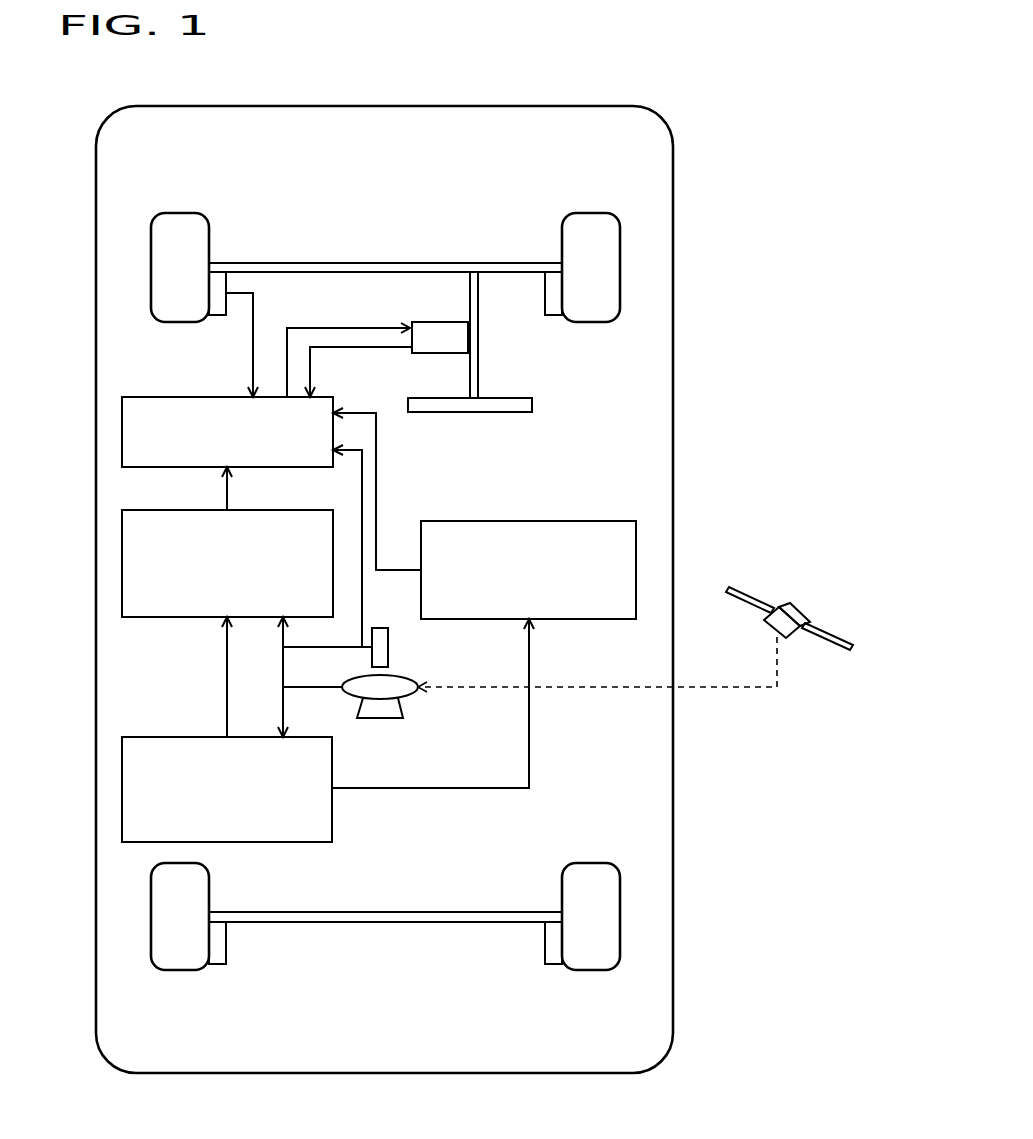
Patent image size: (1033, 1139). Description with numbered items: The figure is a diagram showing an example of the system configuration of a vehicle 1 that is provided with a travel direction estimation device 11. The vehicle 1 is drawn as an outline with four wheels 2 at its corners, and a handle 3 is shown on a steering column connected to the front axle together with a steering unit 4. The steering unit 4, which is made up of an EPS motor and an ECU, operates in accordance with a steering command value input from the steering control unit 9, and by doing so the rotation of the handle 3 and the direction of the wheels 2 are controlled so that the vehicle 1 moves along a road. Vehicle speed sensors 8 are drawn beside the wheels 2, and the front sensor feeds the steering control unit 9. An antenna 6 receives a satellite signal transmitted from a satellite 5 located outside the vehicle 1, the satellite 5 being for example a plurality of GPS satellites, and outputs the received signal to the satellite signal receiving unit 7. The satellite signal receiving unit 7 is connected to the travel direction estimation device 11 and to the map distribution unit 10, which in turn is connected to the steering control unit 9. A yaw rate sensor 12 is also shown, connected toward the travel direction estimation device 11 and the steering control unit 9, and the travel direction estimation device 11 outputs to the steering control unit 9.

The vehicle 1 is at (673, 193).
The wheels 2 is at (209, 227).
The handle 3 is at (490, 412).
The steering unit 4 is at (412, 322).
The satellite 5 is at (810, 620).
The antenna 6 is at (405, 700).
The satellite signal receiving unit 7 is at (285, 842).
The vehicle speed sensors 8 is at (218, 315).
The steering control unit 9 is at (122, 428).
The map distribution unit 10 is at (543, 521).
The travel direction estimation device 11 is at (122, 548).
The yaw rate sensor 12 is at (388, 647).